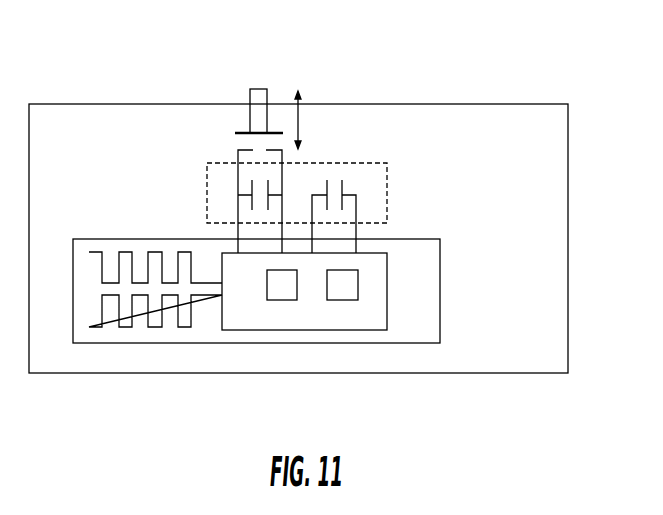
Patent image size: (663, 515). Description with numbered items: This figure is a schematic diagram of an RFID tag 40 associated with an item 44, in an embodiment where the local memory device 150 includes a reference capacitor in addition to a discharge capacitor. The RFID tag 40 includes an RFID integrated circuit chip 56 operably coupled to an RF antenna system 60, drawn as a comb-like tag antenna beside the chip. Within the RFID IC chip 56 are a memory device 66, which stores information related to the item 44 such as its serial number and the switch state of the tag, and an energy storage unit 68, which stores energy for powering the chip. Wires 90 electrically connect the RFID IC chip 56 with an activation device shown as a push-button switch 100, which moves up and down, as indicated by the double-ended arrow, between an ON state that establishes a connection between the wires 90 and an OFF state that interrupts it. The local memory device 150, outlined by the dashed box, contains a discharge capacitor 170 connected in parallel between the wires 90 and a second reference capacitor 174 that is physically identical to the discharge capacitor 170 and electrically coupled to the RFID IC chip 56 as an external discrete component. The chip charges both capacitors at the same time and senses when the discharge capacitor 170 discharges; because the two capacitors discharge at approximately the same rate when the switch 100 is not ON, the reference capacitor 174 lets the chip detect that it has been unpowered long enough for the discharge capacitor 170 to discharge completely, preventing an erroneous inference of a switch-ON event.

The item 44 is at (87, 104).
The switch 100 is at (253, 69).
The local memory device 150 is at (387, 190).
The discharge capacitor 170 is at (252, 185).
The reference capacitor 174 is at (342, 180).
The wires 90 is at (312, 213).
The RFID tag 40 is at (190, 344).
The RFID integrated circuit chip 56 is at (247, 293).
The RF antenna system 60 is at (127, 317).
The memory device 66 is at (282, 287).
The energy storage unit 68 is at (342, 292).